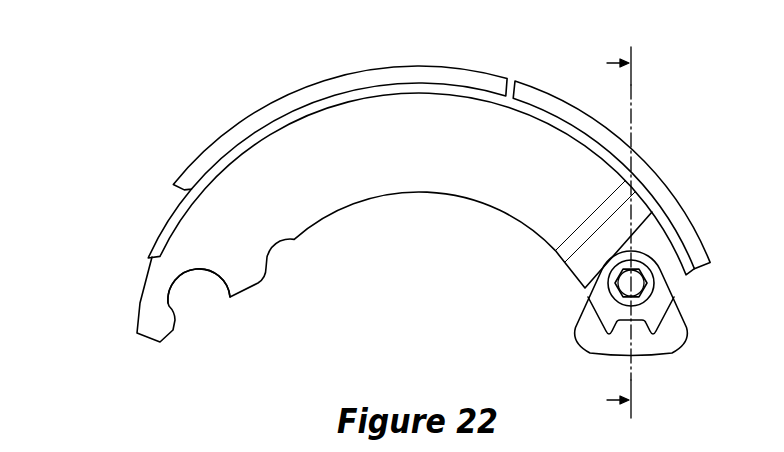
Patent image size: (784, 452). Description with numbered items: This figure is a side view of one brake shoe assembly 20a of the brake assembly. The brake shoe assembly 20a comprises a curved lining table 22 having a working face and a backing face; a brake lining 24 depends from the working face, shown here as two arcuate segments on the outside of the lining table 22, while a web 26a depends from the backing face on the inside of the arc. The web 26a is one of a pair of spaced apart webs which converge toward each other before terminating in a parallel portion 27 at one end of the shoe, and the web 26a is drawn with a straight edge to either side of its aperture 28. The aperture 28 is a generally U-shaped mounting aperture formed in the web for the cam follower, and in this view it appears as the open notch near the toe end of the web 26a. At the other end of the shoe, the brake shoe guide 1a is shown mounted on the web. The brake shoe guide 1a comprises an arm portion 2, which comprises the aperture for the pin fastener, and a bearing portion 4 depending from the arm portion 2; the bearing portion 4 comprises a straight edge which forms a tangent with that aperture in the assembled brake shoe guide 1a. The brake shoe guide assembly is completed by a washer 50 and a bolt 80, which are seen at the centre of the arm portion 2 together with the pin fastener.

The brake shoe assembly 20a is at (416, 220).
The lining table 22 is at (153, 233).
The brake lining 24 is at (188, 175).
The web 26a is at (443, 170).
The parallel portion 27 is at (650, 243).
The mounting aperture 28 is at (197, 302).
The brake shoe guide 1a is at (634, 329).
The arm portion 2 is at (673, 300).
The bearing portion 4 is at (665, 340).
The washer 50 is at (612, 300).
The bolt 80 is at (625, 285).